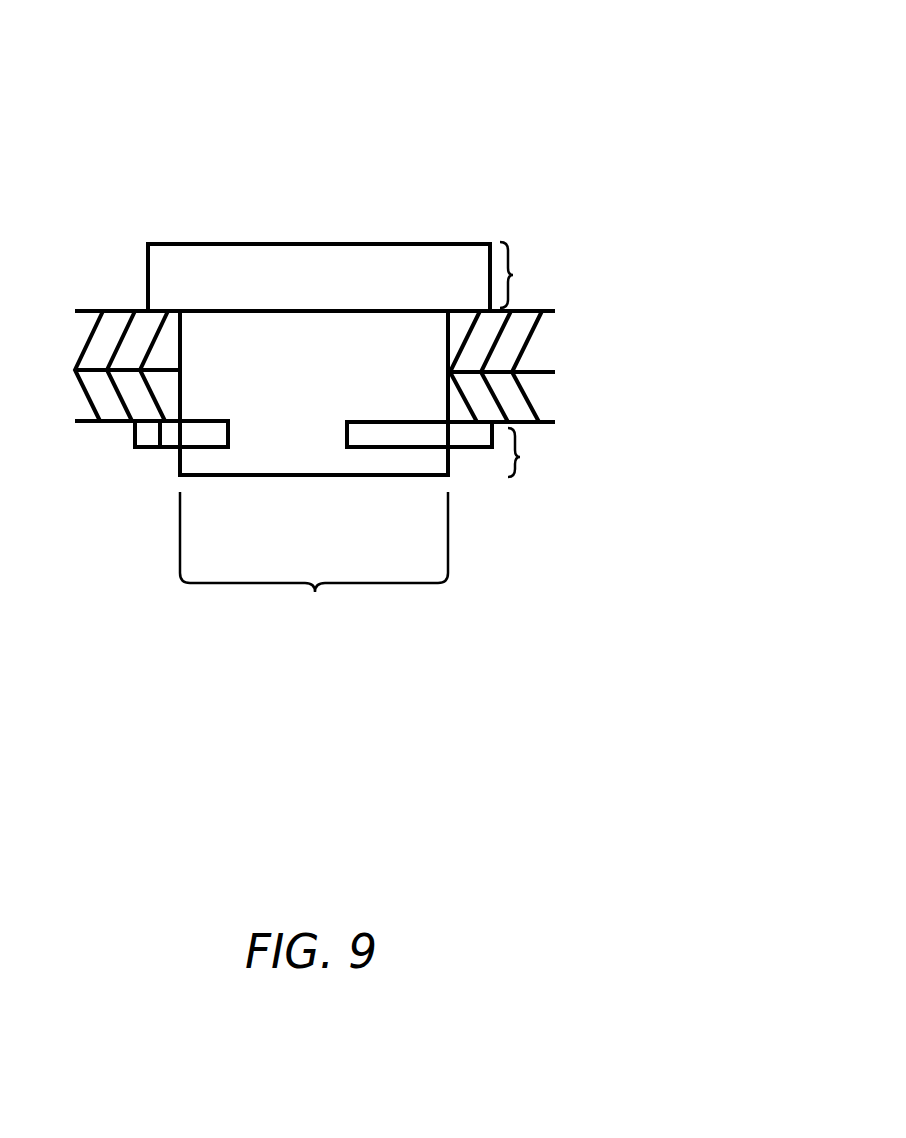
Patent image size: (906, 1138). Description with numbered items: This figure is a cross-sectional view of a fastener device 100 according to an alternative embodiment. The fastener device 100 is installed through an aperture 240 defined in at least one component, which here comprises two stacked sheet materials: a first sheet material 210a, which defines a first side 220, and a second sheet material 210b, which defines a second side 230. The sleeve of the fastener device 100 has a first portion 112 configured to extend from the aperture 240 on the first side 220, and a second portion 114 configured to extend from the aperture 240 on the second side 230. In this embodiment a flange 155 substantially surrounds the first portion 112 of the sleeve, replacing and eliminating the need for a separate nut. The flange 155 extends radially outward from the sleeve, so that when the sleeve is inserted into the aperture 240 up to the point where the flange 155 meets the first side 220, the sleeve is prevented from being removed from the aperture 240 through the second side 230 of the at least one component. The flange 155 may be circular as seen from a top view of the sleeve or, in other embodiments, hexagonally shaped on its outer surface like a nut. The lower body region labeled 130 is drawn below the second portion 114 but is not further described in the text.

The fastener device 100 is at (237, 182).
The flange 155 is at (353, 273).
The first portion 112 is at (545, 275).
The second portion 114 is at (533, 447).
The body 130 is at (448, 447).
The first sheet material 210a is at (533, 343).
The second sheet material 210b is at (533, 393).
The first side 220 is at (113, 310).
The second side 230 is at (98, 423).
The aperture 240 is at (314, 569).